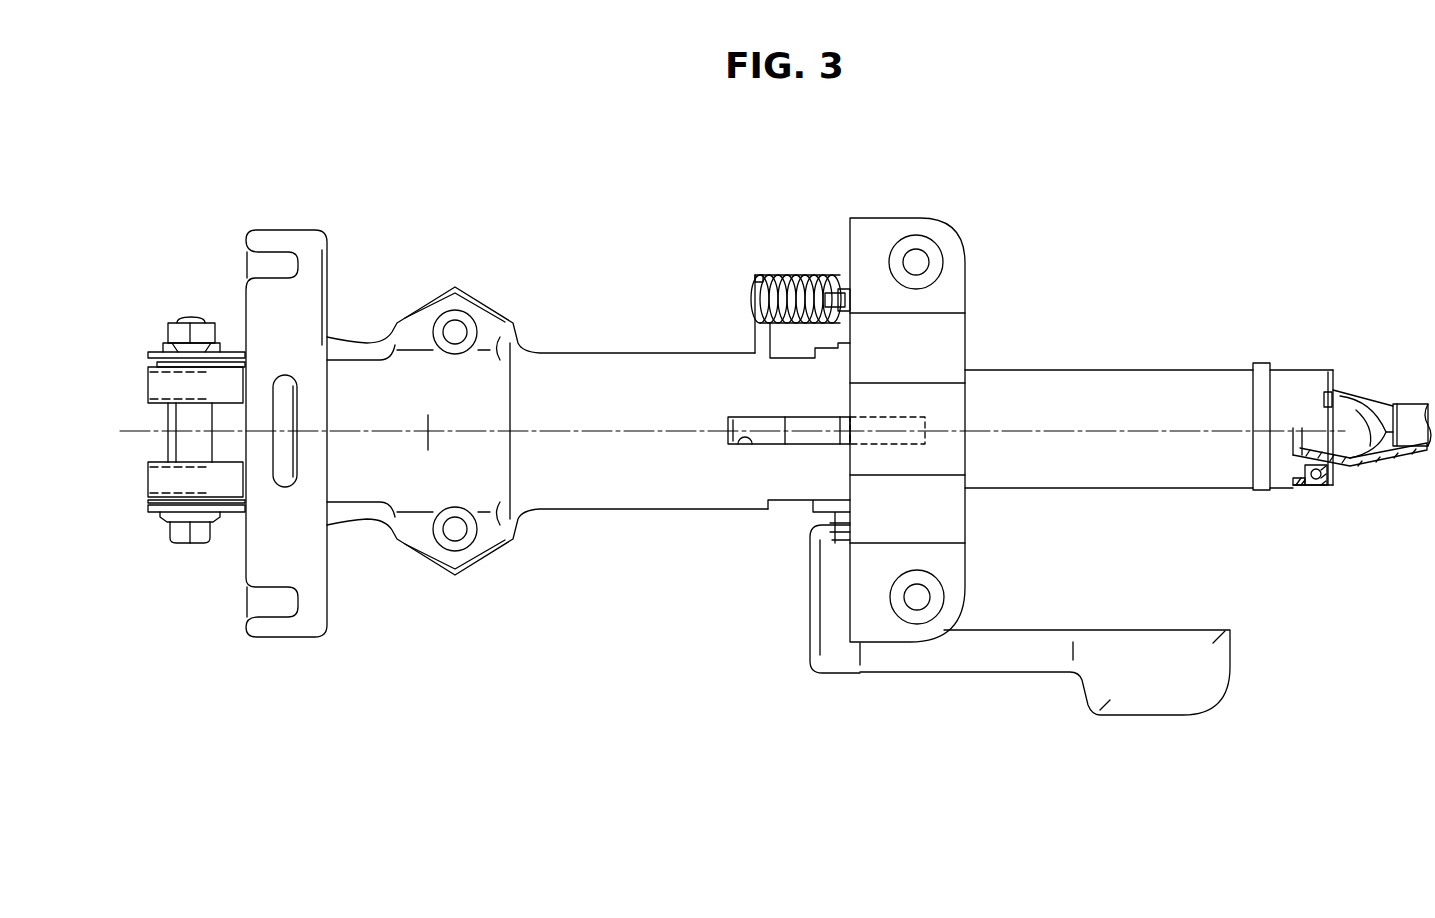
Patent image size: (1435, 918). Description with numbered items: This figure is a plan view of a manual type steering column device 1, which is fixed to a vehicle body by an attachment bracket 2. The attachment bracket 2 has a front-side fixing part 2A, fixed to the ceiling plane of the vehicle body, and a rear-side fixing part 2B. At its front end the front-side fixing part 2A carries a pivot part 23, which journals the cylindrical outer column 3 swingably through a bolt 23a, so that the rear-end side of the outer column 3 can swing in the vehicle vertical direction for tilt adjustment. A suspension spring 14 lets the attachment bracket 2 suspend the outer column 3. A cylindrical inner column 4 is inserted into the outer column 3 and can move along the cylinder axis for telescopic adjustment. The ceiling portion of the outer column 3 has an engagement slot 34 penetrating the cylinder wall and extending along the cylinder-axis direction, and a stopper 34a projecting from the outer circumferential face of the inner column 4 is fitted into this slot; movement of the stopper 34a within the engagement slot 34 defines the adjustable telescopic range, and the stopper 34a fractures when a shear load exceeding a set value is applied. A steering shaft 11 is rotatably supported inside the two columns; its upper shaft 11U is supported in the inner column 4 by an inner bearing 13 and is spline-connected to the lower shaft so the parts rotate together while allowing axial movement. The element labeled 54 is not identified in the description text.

The steering column device 1 is at (1068, 120).
The attachment bracket 2 is at (667, 430).
The front-side fixing part 2A is at (327, 248).
The rear-side fixing part 2B is at (966, 292).
The outer column 3 is at (585, 352).
The inner column 4 is at (1137, 368).
The steering shaft 11 is at (1364, 389).
The upper shaft 11U is at (1347, 390).
The inner bearing 13 is at (1316, 487).
The suspension spring 14 is at (792, 275).
The pivot part 23 is at (155, 352).
The bolt 23a is at (183, 537).
The engagement slot 34 is at (738, 437).
The stopper 34a is at (798, 437).
The arm 54 is at (1128, 707).